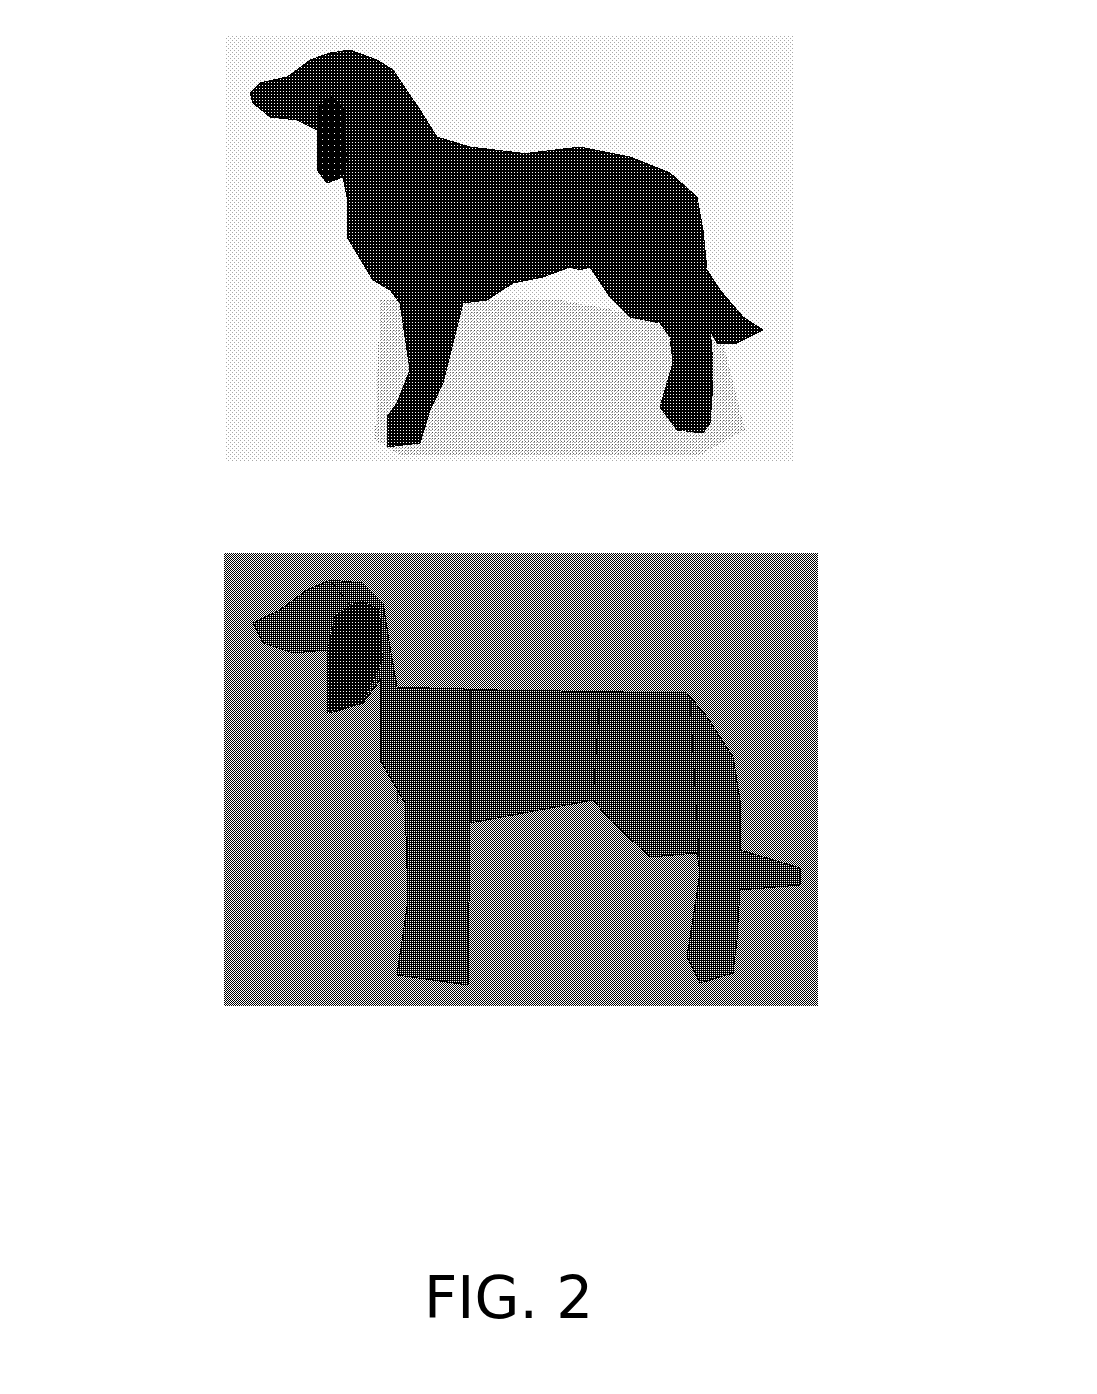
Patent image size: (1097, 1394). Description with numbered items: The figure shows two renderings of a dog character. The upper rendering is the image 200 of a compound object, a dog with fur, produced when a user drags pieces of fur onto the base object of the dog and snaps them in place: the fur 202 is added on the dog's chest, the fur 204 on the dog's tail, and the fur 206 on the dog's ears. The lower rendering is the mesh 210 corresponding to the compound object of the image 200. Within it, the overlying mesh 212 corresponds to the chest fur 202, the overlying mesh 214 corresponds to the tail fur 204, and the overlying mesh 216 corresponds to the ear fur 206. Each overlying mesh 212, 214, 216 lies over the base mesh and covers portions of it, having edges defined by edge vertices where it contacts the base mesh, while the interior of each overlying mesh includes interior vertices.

The image 200 is at (503, 231).
The fur 202 is at (503, 248).
The fur 204 is at (690, 273).
The fur 206 is at (204, 139).
The mesh 210 is at (475, 761).
The overlying mesh 212 is at (475, 782).
The overlying mesh 214 is at (717, 822).
The overlying mesh 216 is at (227, 658).